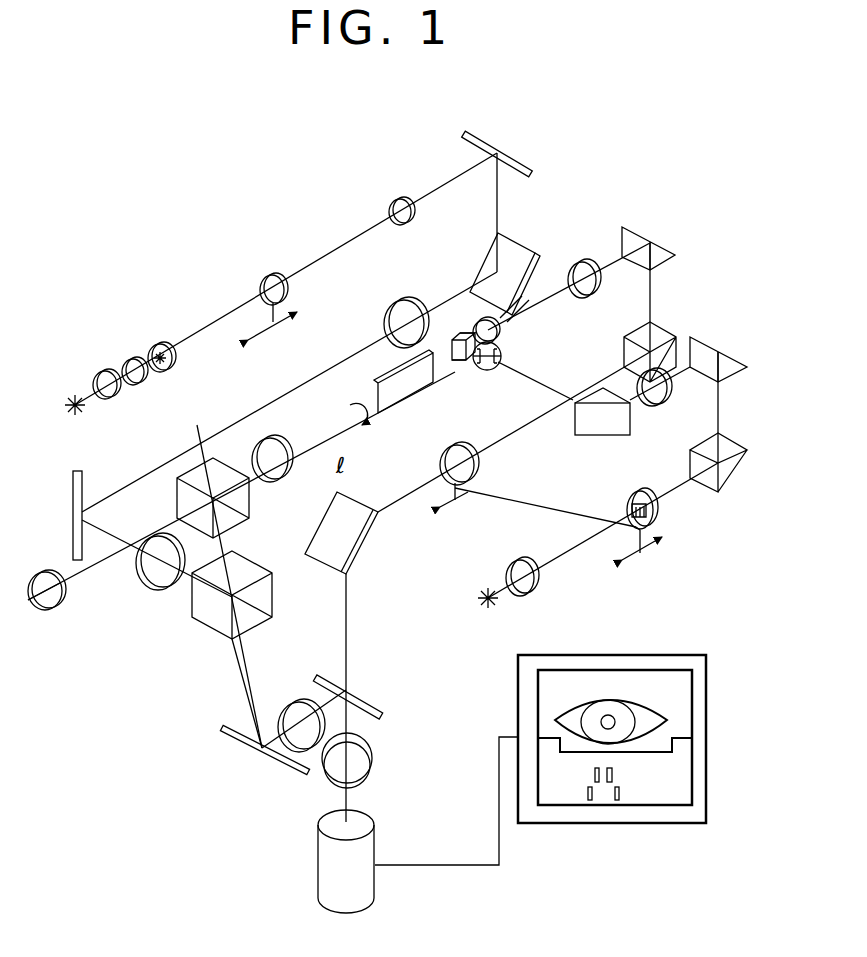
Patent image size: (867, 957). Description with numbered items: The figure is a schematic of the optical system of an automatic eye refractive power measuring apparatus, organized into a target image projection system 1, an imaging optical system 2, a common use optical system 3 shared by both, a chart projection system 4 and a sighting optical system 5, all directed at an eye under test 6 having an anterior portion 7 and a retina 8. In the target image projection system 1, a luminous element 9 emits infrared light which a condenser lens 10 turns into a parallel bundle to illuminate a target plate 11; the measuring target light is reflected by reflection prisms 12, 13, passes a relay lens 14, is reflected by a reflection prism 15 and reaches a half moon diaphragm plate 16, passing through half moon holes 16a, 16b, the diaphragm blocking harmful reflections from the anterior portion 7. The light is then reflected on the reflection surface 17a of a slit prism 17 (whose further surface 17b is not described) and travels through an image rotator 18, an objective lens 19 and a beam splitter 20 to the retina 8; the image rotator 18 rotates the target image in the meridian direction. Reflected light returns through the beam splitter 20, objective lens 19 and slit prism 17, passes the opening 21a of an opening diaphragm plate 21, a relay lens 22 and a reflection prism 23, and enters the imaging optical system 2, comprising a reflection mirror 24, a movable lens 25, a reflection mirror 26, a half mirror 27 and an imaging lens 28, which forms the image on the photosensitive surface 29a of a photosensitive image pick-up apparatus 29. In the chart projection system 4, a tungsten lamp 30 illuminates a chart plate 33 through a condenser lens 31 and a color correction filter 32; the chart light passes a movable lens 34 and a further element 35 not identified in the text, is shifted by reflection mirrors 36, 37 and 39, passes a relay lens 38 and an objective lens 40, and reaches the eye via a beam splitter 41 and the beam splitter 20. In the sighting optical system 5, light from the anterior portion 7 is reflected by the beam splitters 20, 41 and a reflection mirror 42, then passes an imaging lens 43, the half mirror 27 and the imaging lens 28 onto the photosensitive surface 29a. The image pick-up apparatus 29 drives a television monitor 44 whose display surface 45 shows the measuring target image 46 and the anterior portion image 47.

The target image projection system 1 is at (648, 556).
The imaging optical system 2 is at (358, 662).
The common use optical system 3 is at (364, 428).
The chart projection system 4 is at (222, 272).
The sighting optical system 5 is at (232, 686).
The eye under test 6 is at (36, 568).
The anterior portion 7 is at (63, 590).
The retina 8 is at (30, 607).
The luminous element 9 is at (488, 606).
The condenser lens 10 is at (530, 596).
The target plate 11 is at (638, 492).
The reflection prism 12 is at (728, 470).
The reflection prism 13 is at (706, 352).
The relay lens 14 is at (657, 402).
The reflection prism 15 is at (592, 428).
The half moon diaphragm plate 16 is at (495, 365).
The half moon hole 16a is at (500, 351).
The half moon hole 16b is at (480, 366).
The slit prism 17 is at (460, 333).
The reflection surface 17a is at (455, 362).
The scanning member surface 17b is at (468, 328).
The image rotator 18 is at (410, 398).
The objective lens 19 is at (280, 448).
The beam splitter 20 is at (222, 480).
The opening diaphragm plate 21 is at (497, 332).
The opening 21a is at (536, 296).
The relay lens 22 is at (580, 263).
The reflection prism 23 is at (645, 243).
The reflection mirror 24 is at (660, 335).
The movable lens 25 is at (470, 468).
The reflection mirror 26 is at (350, 520).
The half mirror 27 is at (385, 705).
The imaging lens 28 is at (372, 758).
The photosensitive apparatus 29 is at (380, 852).
The photosensitive surface 29a is at (365, 828).
The tungsten lamp 30 is at (72, 403).
The condenser lens 31 is at (98, 376).
The color correction filter 32 is at (128, 362).
The chart plate 33 is at (157, 345).
The movable lens 34 is at (270, 276).
The lens 35 is at (399, 200).
The reflection mirror 36 is at (505, 150).
The reflection mirror 37 is at (517, 247).
The relay lens 38 is at (416, 300).
The reflection mirror 39 is at (85, 482).
The objective lens 40 is at (161, 585).
The beam splitter 41 is at (218, 625).
The reflection mirror 42 is at (240, 748).
The imaging lens 43 is at (292, 710).
The television monitor 44 is at (657, 662).
The display surface 45 is at (678, 797).
The measuring target image 46 is at (623, 783).
The anterior portion image 47 is at (657, 705).